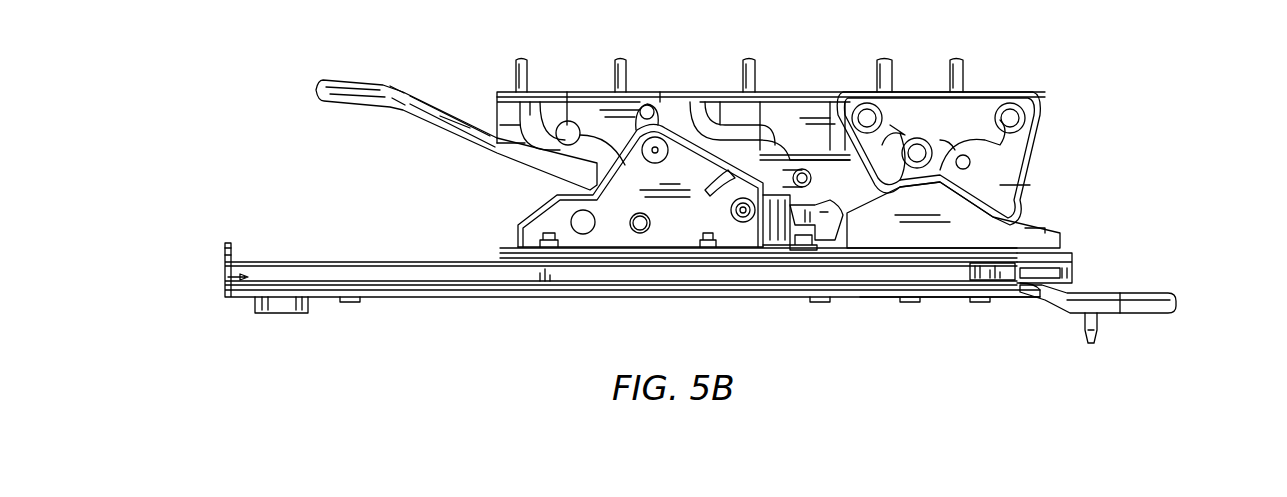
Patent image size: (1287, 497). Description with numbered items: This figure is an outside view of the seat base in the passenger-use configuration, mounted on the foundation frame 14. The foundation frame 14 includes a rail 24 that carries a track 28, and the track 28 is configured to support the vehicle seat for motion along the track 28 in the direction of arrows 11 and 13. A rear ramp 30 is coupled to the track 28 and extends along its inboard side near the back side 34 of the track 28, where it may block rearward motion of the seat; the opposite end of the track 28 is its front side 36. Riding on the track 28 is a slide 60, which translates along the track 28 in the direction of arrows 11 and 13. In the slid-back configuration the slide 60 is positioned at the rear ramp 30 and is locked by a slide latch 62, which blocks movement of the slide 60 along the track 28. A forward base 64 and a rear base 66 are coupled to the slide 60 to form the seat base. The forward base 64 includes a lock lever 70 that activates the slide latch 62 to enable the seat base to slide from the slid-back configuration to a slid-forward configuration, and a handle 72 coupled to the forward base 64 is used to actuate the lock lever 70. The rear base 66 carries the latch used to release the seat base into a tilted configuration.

The arrow 11 is at (545, 330).
The arrow 13 is at (552, 353).
The foundation frame 14 is at (760, 272).
The rail 24 is at (223, 277).
The track 28 is at (655, 272).
The rear ramp 30 is at (967, 296).
The back side 34 is at (1183, 292).
The front side 36 is at (223, 247).
The slide 60 is at (1070, 262).
The slide latch 62 is at (803, 252).
The forward base 64 is at (545, 219).
The rear base 66 is at (983, 227).
The lock lever 70 is at (797, 213).
The handle 72 is at (325, 82).